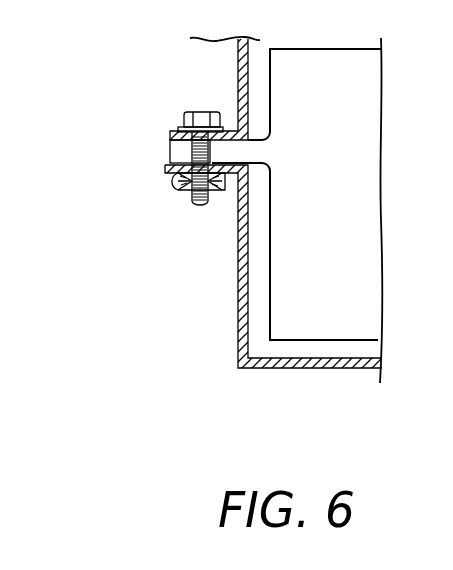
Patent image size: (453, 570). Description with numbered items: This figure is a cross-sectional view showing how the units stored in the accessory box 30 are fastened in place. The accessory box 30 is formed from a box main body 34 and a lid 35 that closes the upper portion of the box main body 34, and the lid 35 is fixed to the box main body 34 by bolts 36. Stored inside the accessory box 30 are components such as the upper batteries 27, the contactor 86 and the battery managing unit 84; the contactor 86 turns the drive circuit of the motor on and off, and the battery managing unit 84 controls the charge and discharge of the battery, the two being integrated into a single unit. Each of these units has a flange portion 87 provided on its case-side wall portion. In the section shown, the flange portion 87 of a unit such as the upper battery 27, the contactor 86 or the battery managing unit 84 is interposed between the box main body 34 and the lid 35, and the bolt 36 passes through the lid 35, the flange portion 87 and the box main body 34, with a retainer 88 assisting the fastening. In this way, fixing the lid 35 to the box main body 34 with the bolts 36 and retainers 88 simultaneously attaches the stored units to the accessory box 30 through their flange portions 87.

The upper battery 27 is at (204, 210).
The battery managing unit 84 is at (204, 210).
The contactor 86 is at (288, 300).
The accessory box 30 is at (205, 202).
The lid 35 is at (237, 66).
The box main body 34 is at (240, 262).
The bolt 36 is at (200, 115).
The flange portion 87 is at (177, 151).
The retainer 88 is at (183, 186).